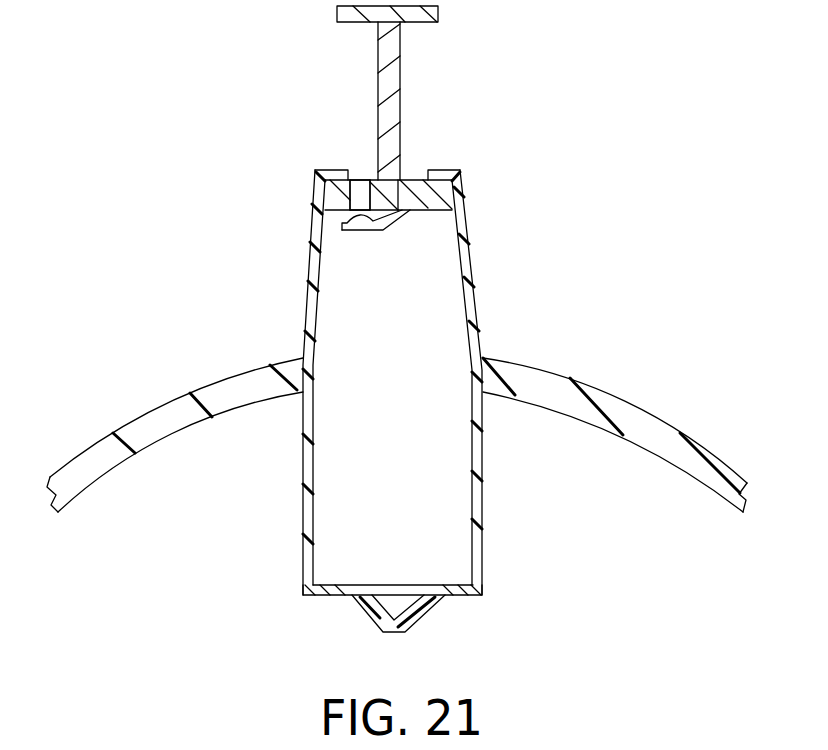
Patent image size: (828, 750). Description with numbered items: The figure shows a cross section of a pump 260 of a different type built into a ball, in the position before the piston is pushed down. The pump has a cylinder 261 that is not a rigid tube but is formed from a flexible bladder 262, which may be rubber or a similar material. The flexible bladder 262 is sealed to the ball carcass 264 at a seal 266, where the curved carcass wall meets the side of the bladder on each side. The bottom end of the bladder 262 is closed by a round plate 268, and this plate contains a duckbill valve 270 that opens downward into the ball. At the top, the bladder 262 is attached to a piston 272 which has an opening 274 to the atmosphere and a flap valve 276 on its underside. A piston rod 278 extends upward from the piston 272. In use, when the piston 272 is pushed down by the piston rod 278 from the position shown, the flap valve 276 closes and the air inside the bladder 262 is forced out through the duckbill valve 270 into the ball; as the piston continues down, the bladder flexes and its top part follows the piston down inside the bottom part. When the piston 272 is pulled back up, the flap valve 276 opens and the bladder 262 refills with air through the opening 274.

The pump 260 is at (260, 333).
The cylinder 261 is at (427, 270).
The flexible bladder 262 is at (475, 307).
The ball carcass 264 is at (647, 423).
The seal 266 is at (488, 381).
The round plate 268 is at (455, 595).
The duckbill valve 270 is at (370, 617).
The piston 272 is at (415, 177).
The opening 274 is at (360, 177).
The flap valve 276 is at (370, 232).
The piston rod 278 is at (400, 80).